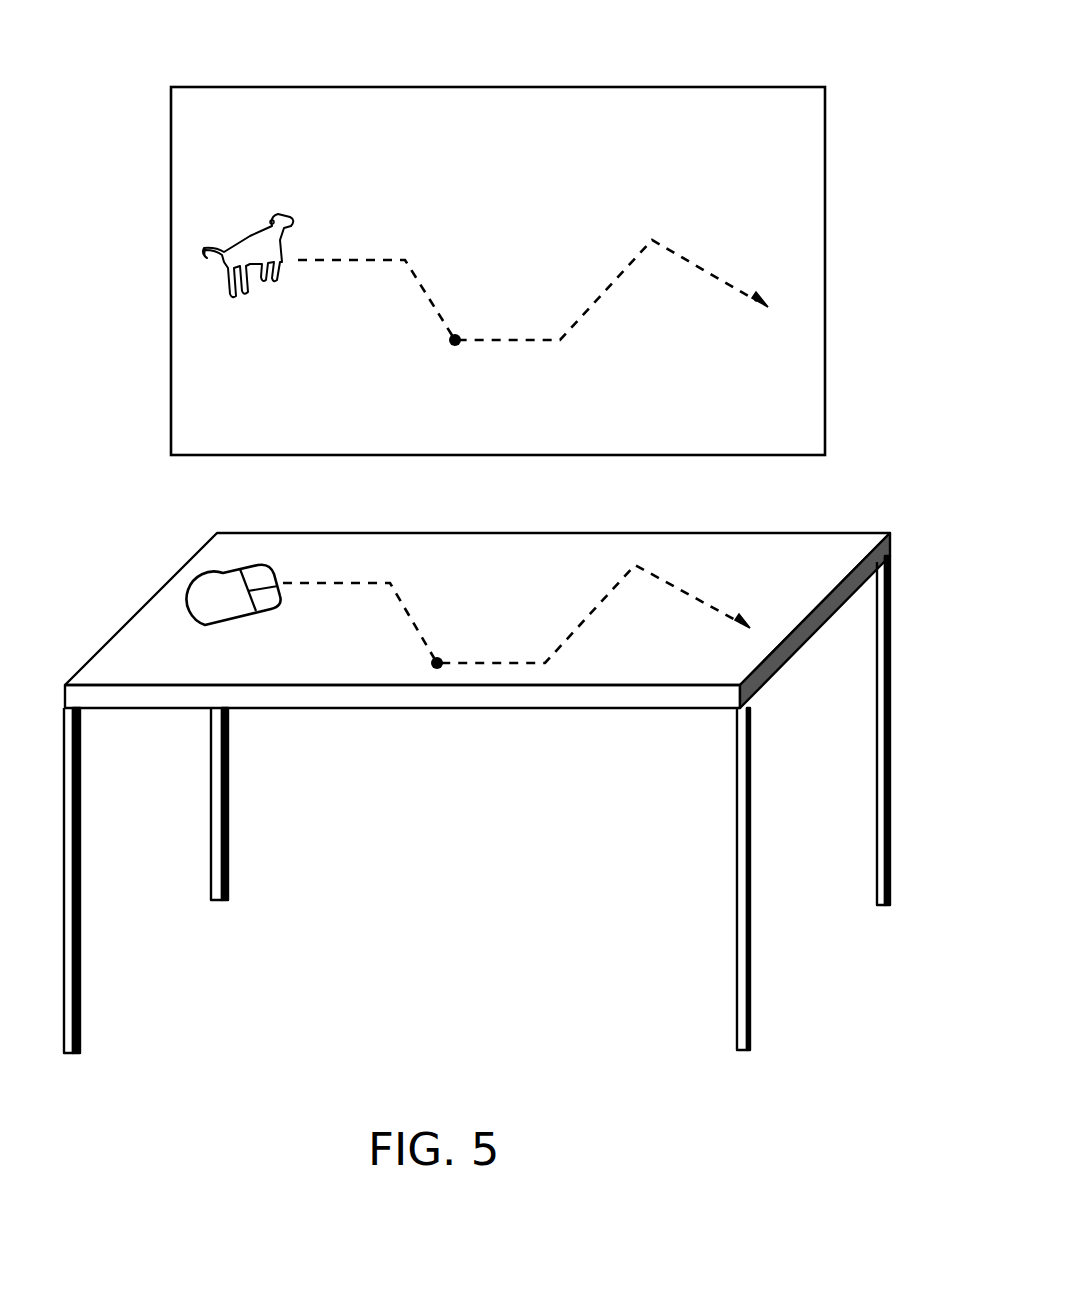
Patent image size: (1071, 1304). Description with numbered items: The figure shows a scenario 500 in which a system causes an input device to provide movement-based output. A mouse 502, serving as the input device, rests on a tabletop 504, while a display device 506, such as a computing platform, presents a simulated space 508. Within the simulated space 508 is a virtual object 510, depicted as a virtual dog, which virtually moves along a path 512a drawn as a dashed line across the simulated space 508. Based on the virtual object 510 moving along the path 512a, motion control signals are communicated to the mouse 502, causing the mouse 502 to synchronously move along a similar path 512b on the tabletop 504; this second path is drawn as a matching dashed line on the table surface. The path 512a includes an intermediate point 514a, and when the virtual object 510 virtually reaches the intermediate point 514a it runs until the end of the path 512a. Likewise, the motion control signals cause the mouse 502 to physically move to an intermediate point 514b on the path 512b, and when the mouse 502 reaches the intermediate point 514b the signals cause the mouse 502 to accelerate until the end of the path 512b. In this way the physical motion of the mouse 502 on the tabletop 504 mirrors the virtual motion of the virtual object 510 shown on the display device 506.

The scenario 500 is at (780, 46).
The mouse 502 is at (223, 577).
The tabletop 504 is at (180, 669).
The display device 506 is at (166, 113).
The simulated space 508 is at (229, 125).
The virtual object 510 is at (242, 242).
The path 512a is at (612, 287).
The path 512b is at (352, 583).
The intermediate point 514a is at (450, 342).
The intermediate point 514b is at (442, 657).